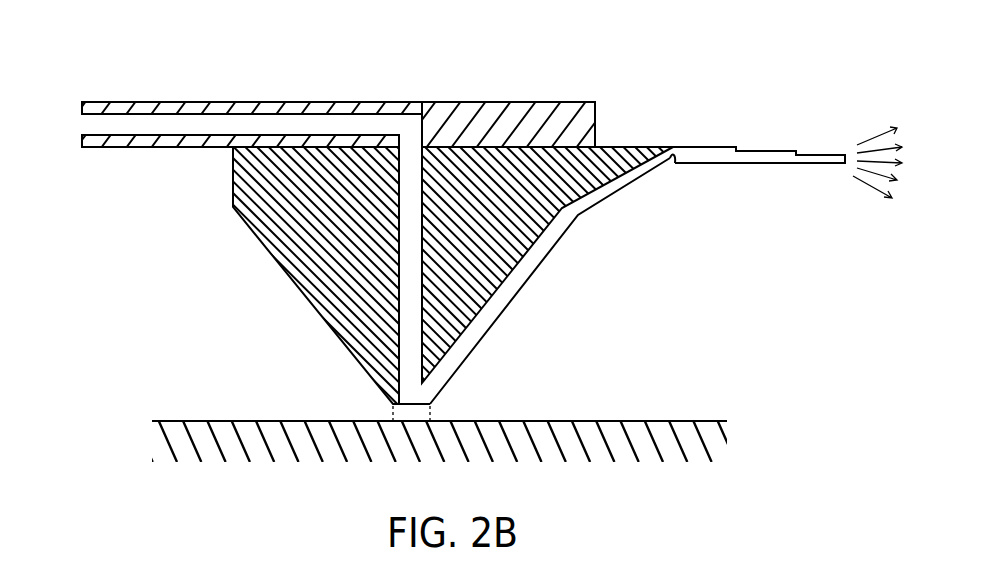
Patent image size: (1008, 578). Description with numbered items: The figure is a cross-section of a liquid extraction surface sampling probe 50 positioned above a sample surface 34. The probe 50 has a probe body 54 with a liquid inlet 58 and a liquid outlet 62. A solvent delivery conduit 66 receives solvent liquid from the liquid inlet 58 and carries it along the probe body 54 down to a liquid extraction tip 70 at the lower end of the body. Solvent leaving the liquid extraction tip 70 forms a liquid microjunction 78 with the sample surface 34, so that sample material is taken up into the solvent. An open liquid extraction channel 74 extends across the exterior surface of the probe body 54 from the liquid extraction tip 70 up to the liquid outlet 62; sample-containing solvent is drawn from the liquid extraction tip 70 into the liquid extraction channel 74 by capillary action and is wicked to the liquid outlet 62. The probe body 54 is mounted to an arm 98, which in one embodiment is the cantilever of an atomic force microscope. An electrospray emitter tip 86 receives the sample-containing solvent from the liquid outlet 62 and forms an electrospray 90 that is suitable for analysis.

The sample surface 34 is at (685, 421).
The liquid extraction surface sampling probe 50 is at (216, 57).
The probe body 54 is at (272, 262).
The liquid inlet 58 is at (82, 120).
The liquid outlet 62 is at (672, 158).
The solvent delivery conduit 66 is at (323, 125).
The liquid extraction tip 70 is at (390, 406).
The open liquid extraction channel 74 is at (522, 273).
The liquid microjunction 78 is at (428, 418).
The electrospray emitter tip 86 is at (760, 147).
The electrospray 90 is at (862, 185).
The arm 98 is at (520, 102).